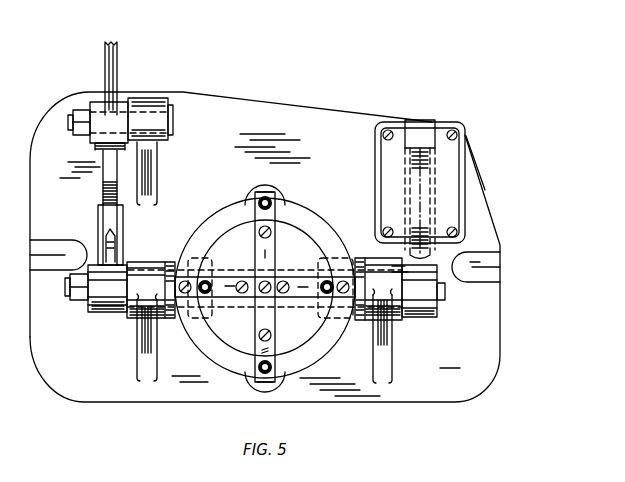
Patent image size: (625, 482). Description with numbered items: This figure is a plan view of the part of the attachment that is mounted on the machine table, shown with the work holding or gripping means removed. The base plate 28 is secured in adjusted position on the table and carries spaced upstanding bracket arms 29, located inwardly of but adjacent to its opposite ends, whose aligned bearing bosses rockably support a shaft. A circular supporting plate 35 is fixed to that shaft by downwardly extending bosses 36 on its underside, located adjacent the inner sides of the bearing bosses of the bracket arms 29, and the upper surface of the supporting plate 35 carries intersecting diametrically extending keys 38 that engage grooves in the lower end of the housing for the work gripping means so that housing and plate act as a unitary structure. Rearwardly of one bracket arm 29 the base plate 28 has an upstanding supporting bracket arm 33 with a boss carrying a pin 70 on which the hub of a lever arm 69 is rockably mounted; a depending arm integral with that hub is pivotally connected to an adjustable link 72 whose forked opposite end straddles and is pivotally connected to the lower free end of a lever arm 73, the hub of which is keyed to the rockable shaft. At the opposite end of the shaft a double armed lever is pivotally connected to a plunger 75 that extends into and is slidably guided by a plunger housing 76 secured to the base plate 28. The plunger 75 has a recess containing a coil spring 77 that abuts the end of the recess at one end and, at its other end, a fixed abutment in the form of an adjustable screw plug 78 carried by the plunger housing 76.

The base plate 28 is at (487, 356).
The bracket arms 29 is at (147, 352).
The supporting bracket arm 33 is at (148, 165).
The supporting plate 35 is at (317, 218).
The bosses 36 is at (176, 263).
The keys 38 is at (222, 284).
The lever arm 69 is at (114, 70).
The pin 70 is at (153, 103).
The adjustable link 72 is at (100, 203).
The lever arm 73 is at (107, 313).
The plunger 75 is at (425, 226).
The plunger housing 76 is at (473, 196).
The coil spring 77 is at (424, 168).
The adjustable screw plug 78 is at (432, 121).